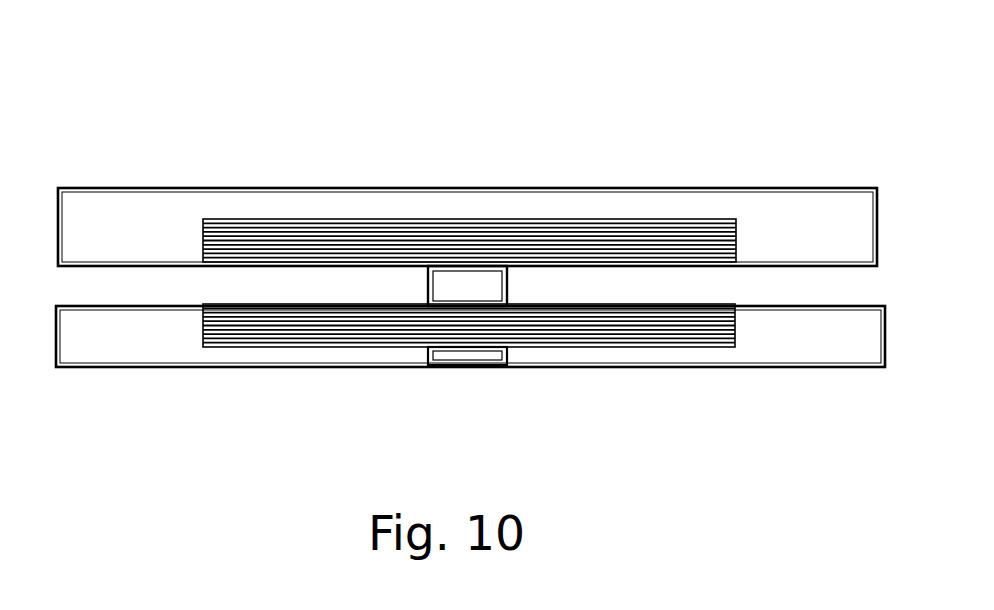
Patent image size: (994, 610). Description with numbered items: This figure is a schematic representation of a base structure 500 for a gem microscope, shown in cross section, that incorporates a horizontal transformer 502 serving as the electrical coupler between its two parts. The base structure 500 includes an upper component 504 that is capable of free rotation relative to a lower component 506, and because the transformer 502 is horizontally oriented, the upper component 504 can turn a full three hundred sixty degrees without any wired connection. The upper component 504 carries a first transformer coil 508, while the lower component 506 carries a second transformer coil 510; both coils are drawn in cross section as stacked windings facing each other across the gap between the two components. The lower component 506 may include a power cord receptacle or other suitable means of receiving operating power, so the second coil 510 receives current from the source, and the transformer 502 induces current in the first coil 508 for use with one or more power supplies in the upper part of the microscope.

The base structure 500 is at (506, 52).
The horizontal transformer 502 is at (166, 236).
The upper component 504 is at (782, 188).
The lower component 506 is at (788, 368).
The first transformer coil 508 is at (736, 241).
The second transformer coil 510 is at (735, 330).